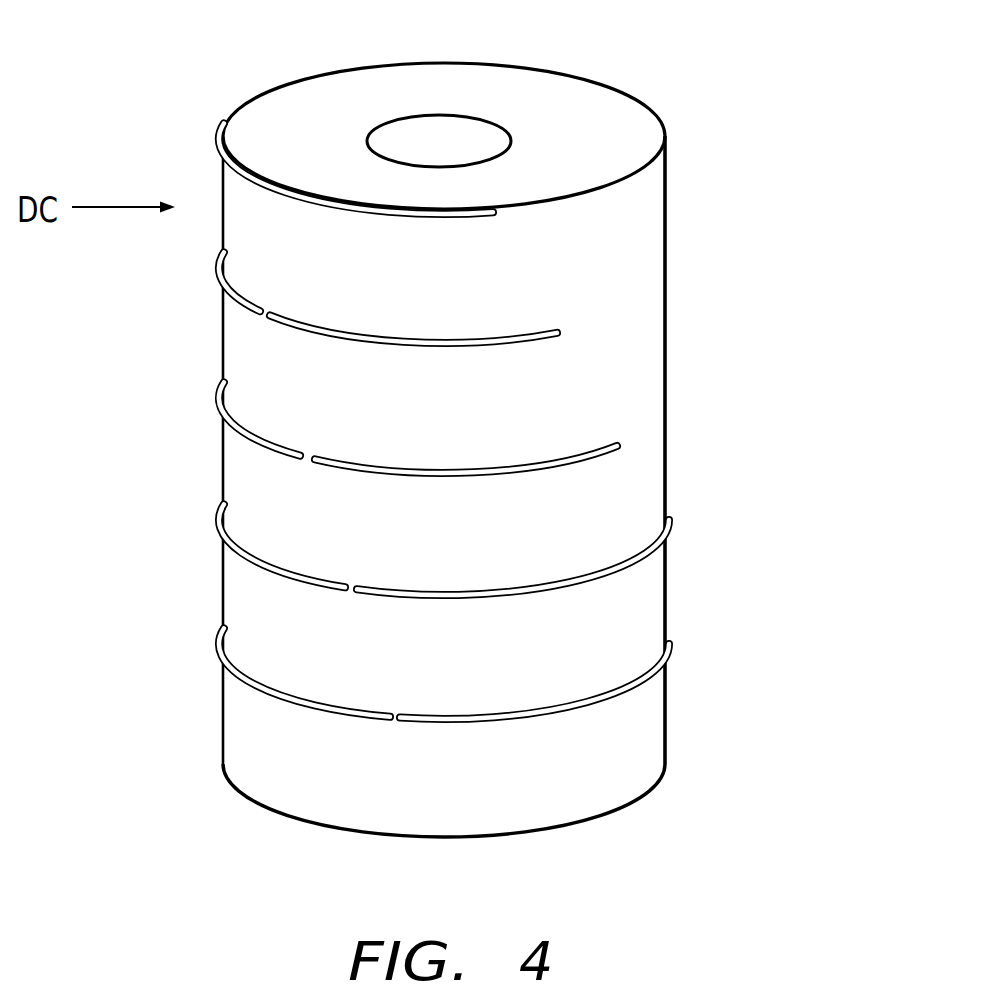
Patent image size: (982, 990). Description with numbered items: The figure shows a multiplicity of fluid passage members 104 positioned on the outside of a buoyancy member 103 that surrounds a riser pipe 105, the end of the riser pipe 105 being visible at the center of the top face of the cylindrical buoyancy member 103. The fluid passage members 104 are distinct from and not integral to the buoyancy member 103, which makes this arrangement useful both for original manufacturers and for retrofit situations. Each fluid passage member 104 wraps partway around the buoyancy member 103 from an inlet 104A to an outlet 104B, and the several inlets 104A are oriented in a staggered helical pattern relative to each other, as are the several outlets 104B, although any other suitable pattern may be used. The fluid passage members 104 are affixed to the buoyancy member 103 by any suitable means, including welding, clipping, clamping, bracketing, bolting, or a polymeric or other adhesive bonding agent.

The buoyancy member 103 is at (643, 140).
The fluid passage member 104 is at (460, 401).
The inlet 104A is at (216, 132).
The outlet 104B is at (502, 68).
The riser pipe 105 is at (520, 137).